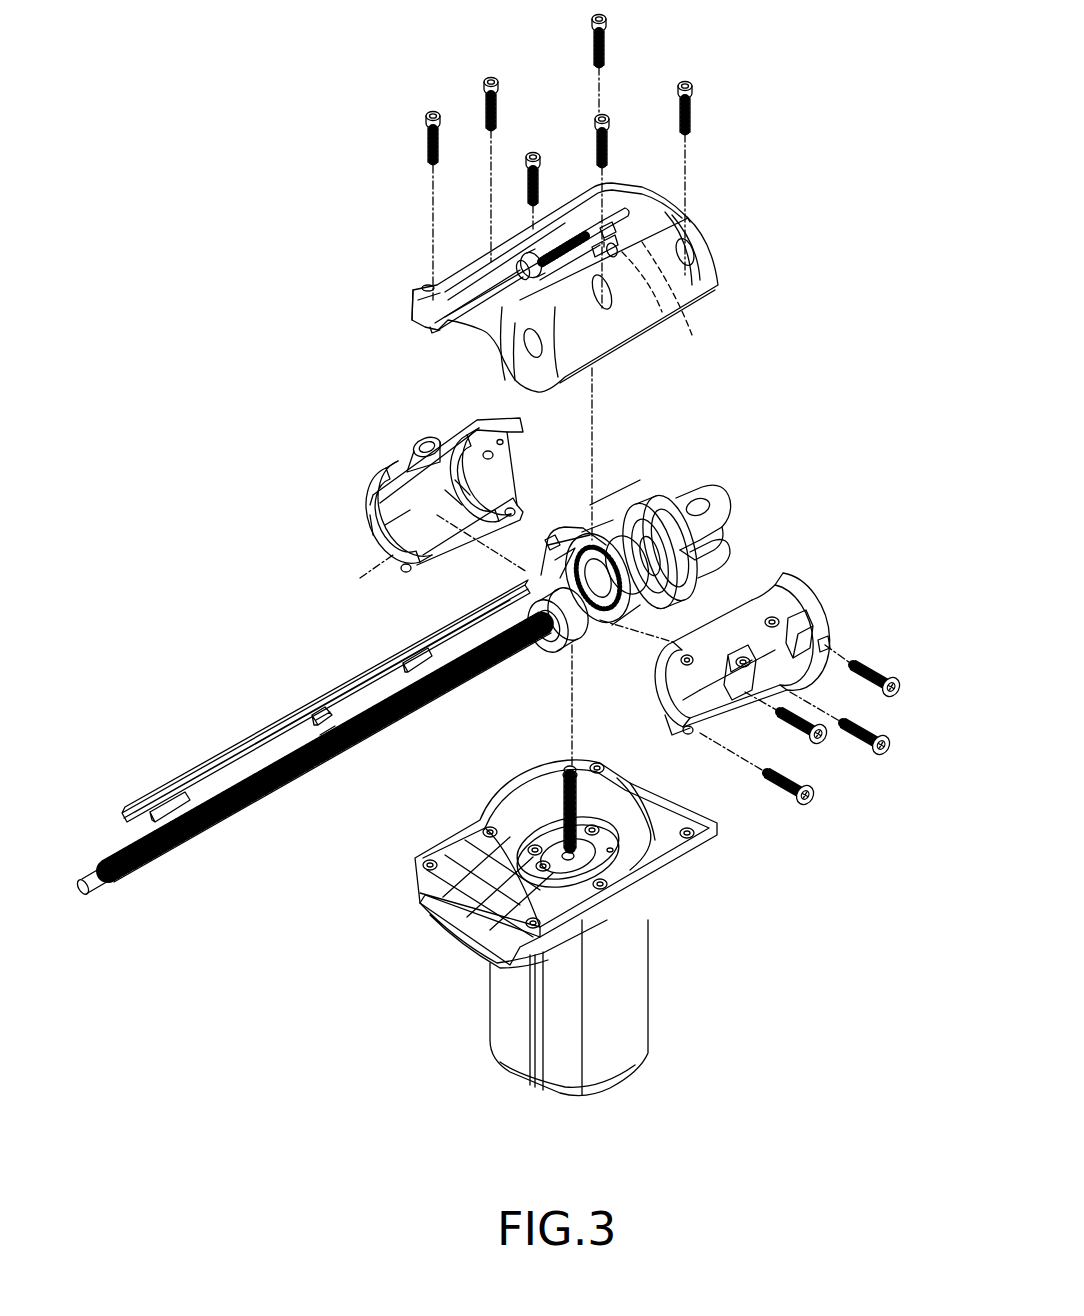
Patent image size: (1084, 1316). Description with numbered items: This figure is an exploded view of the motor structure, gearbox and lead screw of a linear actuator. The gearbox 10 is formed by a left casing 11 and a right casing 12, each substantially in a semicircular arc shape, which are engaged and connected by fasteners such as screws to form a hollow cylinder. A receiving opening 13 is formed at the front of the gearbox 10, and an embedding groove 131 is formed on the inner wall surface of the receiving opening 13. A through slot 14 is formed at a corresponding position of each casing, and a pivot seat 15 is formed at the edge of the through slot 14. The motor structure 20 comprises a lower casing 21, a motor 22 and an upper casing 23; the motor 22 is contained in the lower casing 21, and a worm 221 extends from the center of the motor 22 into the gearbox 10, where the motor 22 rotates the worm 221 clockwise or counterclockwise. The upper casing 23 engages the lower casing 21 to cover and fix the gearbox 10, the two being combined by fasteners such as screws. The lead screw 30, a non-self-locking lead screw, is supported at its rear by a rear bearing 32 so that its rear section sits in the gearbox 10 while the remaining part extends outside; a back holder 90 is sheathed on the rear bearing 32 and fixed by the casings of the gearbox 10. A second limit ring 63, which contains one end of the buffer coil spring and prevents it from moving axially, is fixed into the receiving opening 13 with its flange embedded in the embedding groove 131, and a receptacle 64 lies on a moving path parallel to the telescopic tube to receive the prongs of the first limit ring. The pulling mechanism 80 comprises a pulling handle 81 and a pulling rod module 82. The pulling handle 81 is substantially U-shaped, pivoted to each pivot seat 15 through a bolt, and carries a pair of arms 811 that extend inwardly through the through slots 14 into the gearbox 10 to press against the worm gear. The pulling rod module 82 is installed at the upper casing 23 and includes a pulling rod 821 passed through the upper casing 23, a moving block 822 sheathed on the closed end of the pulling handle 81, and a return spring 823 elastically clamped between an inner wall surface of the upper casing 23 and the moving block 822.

The gearbox 10 is at (828, 580).
The left casing 11 is at (395, 470).
The right casing 12 is at (805, 600).
The receiving opening 13 is at (372, 566).
The embedding groove 131 is at (378, 545).
The through slot 14 is at (740, 693).
The pivot seat 15 is at (740, 660).
The motor structure 20 is at (593, 924).
The lower casing 21 is at (618, 1027).
The motor 22 is at (607, 863).
The worm 221 is at (590, 813).
The upper casing 23 is at (703, 270).
The lead screw 30 is at (305, 777).
The rear bearing 32 is at (700, 565).
The second limit ring 63 is at (572, 635).
The receptacle 64 is at (317, 697).
The pulling mechanism 80 is at (768, 403).
The pulling handle 81 is at (600, 507).
The arms 811 is at (533, 565).
The pulling rod module 82 is at (660, 453).
The pulling rod 821 is at (592, 372).
The moving block 822 is at (667, 315).
The return spring 823 is at (622, 318).
The back holder 90 is at (723, 515).